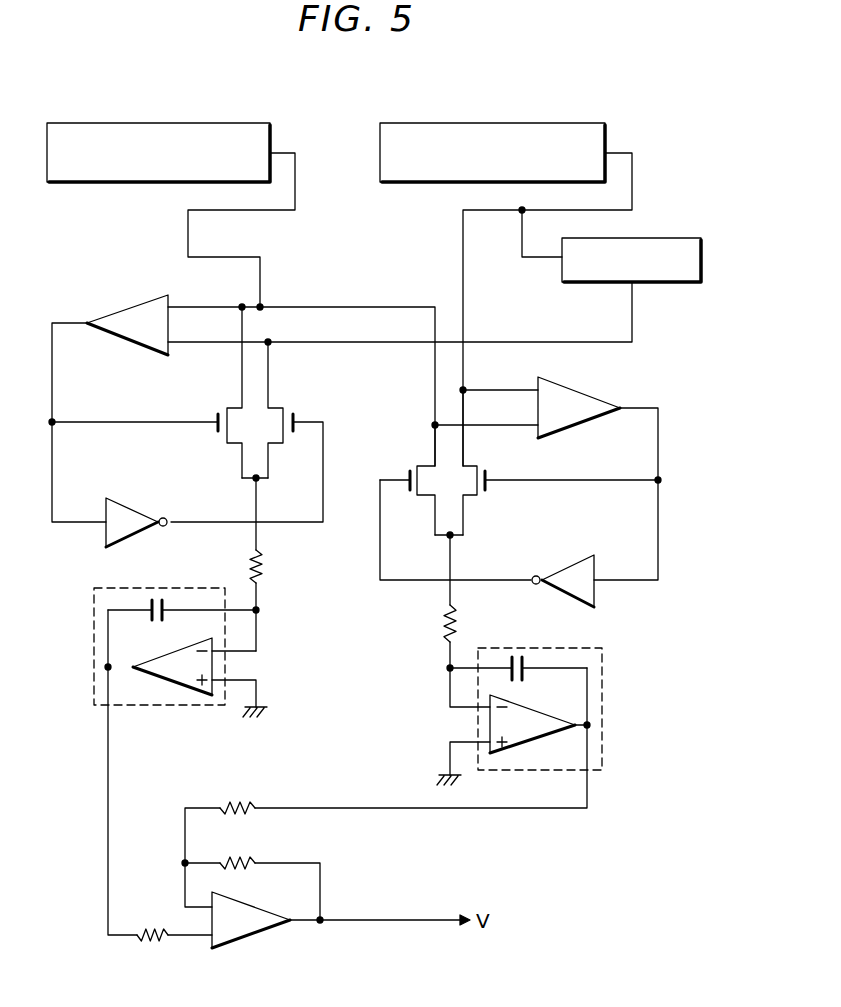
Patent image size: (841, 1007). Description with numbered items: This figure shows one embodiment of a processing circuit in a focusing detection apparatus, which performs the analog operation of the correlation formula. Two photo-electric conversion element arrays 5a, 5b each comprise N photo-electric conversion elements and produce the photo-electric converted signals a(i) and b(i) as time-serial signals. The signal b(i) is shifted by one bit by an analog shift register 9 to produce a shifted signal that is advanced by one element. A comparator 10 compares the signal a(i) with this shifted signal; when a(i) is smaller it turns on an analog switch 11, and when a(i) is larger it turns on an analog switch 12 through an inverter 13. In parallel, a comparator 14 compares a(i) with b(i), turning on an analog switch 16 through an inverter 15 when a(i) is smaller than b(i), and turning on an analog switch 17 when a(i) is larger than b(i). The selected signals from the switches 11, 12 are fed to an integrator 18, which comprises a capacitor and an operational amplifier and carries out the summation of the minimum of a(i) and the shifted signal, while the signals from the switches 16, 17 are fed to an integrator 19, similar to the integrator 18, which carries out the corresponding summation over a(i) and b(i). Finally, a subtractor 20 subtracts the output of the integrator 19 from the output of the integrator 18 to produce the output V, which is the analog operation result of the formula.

The photo-electric conversion element array 5a is at (230, 123).
The photo-electric conversion element array 5b is at (553, 123).
The analog shift register 9 is at (655, 238).
The comparator 10 is at (145, 300).
The analog switch 11 is at (222, 402).
The analog switch 12 is at (288, 402).
The inverter 13 is at (124, 498).
The comparator 14 is at (590, 390).
The inverter 15 is at (568, 563).
The analog switch 16 is at (413, 462).
The analog switch 17 is at (482, 492).
The integrator 18 is at (160, 705).
The integrator 19 is at (602, 727).
The subtractor 20 is at (250, 935).